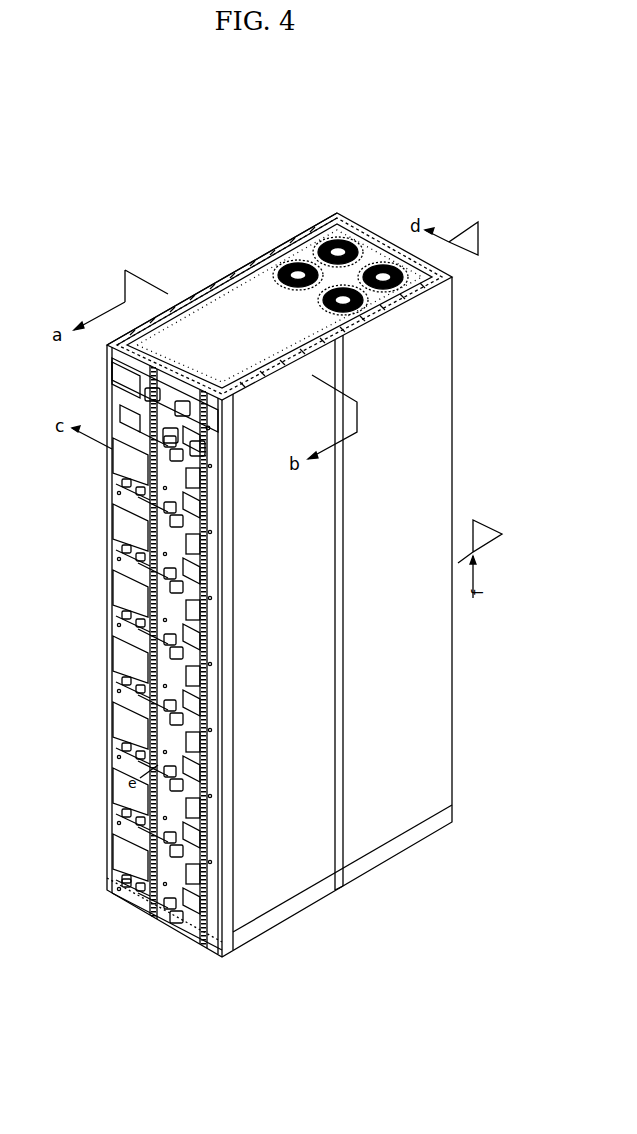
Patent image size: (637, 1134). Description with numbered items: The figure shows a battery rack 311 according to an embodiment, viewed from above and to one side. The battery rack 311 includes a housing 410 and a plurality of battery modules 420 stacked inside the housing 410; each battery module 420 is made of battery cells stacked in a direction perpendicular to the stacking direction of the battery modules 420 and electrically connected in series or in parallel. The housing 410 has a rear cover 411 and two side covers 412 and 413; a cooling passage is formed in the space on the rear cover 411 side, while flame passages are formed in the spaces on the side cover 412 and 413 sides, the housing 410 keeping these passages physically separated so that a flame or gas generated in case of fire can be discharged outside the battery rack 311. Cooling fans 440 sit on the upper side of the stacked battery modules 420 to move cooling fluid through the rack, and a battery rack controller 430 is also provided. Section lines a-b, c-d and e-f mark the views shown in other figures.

The battery rack 311 is at (100, 141).
The housing 410 is at (415, 147).
The rear cover 411 is at (385, 222).
The side cover 412 is at (338, 212).
The side cover 413 is at (313, 222).
The cooling fans 440 is at (272, 252).
The battery rack controller 430 is at (118, 380).
The battery modules 420 is at (110, 513).